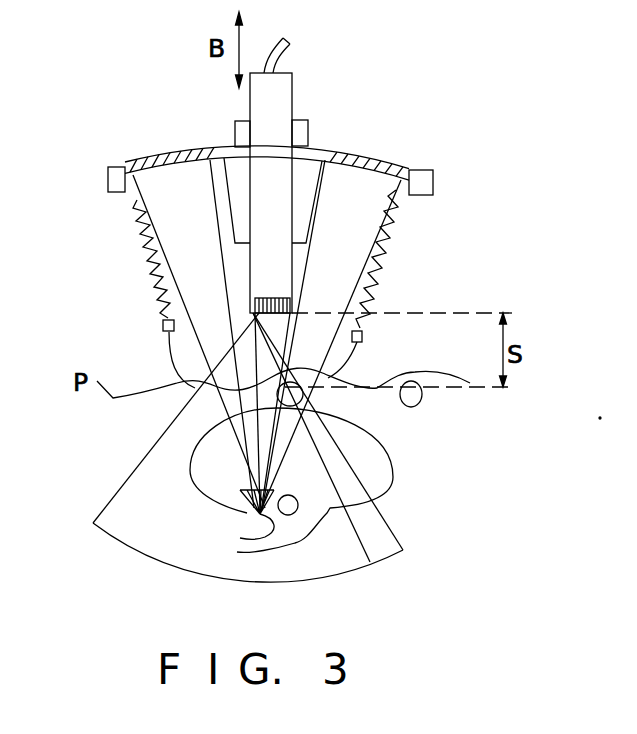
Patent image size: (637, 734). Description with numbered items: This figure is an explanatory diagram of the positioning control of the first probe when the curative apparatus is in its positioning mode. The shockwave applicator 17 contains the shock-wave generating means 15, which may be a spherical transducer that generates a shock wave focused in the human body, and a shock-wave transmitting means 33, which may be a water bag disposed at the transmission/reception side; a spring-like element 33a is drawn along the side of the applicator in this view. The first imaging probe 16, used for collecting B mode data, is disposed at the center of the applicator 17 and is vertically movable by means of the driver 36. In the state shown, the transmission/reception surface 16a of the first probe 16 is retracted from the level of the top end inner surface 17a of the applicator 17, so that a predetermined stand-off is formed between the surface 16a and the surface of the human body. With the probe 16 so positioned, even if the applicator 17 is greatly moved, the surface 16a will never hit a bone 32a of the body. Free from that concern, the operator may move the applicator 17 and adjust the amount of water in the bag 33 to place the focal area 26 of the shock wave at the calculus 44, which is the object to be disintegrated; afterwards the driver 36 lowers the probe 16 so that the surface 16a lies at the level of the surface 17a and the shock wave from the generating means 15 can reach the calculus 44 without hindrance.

The shockwave applicator 17 is at (158, 140).
The shock-wave generating means 15 is at (385, 162).
The first imaging probe 16 is at (287, 97).
The driver 36 is at (237, 132).
The transmission/reception surface 16a is at (278, 298).
The shock-wave transmitting means 33 is at (117, 218).
The spring 33a is at (148, 265).
The top end inner surface 17a is at (345, 372).
The bone 32a is at (310, 393).
The focal area 26 is at (245, 511).
The calculus 44 is at (296, 515).